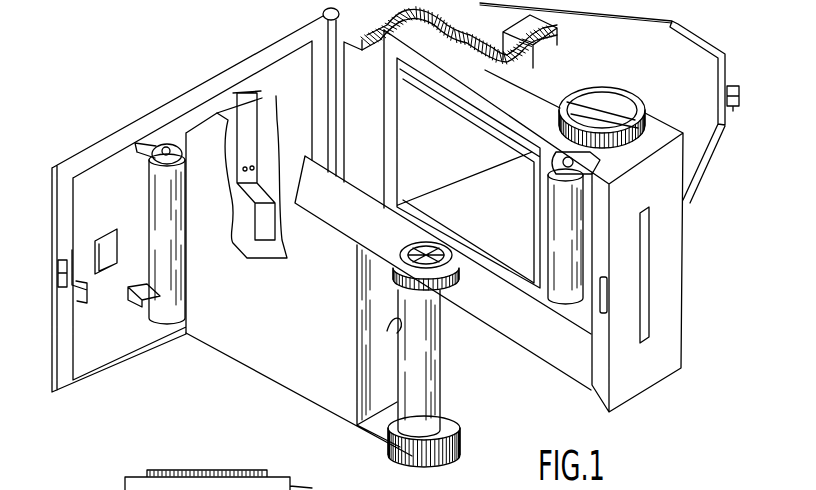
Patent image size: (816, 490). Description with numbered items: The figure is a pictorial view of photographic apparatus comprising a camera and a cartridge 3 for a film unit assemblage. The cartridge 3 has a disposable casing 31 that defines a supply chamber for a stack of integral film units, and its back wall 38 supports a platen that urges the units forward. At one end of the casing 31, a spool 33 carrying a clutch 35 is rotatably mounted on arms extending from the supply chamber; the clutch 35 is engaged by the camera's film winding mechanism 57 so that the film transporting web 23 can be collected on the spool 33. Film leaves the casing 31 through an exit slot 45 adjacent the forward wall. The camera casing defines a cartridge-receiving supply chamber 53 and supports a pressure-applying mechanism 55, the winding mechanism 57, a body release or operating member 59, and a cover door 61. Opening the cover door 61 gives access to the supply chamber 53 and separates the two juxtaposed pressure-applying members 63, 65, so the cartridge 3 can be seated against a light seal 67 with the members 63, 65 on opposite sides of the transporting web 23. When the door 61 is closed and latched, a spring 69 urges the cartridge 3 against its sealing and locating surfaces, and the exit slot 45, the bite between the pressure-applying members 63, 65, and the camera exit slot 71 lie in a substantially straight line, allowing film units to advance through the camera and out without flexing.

The cartridge 3 is at (242, 322).
The film transporting web 23 is at (403, 378).
The disposable casing 31 is at (272, 352).
The spool 33 is at (444, 428).
The clutch 35 is at (425, 246).
The back wall 38 is at (314, 388).
The exit slot 45 is at (382, 328).
The supply chamber 53 is at (366, 80).
The pressure-applying mechanism 55 is at (172, 295).
The film winding mechanism 57 is at (616, 89).
The body release or operating member 59 is at (740, 90).
The cover door 61 is at (127, 136).
The pressure-applying member 63 is at (565, 217).
The pressure-applying member 65 is at (157, 214).
The light seal 67 is at (457, 100).
The spring 69 is at (268, 93).
The camera exit slot 71 is at (645, 281).